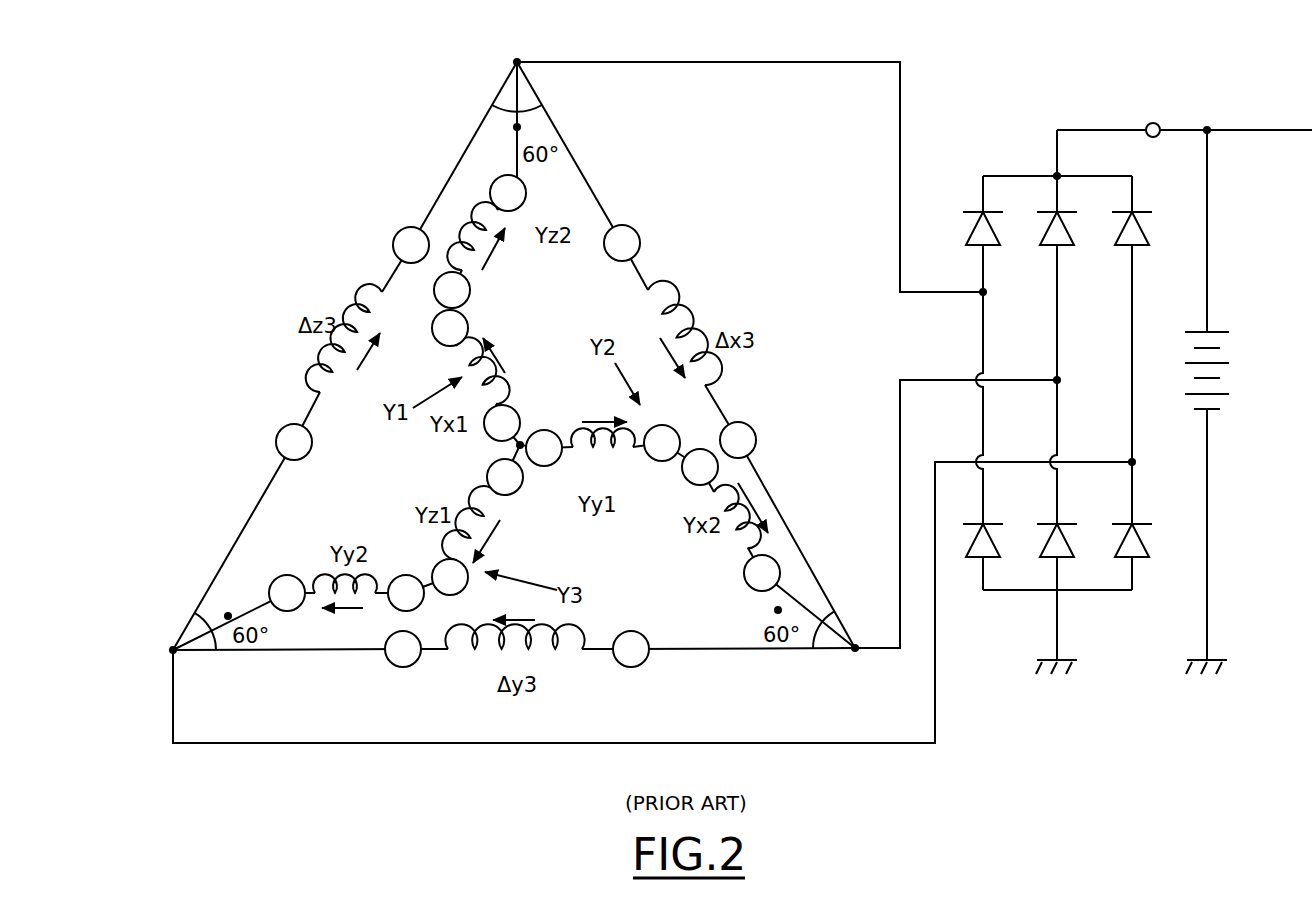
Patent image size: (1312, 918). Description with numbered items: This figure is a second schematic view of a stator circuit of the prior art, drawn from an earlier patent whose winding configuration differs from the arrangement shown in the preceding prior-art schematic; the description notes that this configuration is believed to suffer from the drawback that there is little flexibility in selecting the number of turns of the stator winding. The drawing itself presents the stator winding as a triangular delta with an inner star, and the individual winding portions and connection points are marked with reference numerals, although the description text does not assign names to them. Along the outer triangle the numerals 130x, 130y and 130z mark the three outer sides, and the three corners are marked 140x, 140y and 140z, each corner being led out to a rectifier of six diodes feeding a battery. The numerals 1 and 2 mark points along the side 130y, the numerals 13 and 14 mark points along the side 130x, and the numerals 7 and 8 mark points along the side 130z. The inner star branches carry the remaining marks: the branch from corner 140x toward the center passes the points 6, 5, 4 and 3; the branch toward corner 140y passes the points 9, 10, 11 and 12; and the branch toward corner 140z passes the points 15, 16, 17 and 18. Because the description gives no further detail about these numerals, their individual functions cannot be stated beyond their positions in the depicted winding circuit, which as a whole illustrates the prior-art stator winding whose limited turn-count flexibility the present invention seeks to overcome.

The winding terminal 1 is at (622, 243).
The winding terminal 2 is at (738, 440).
The winding terminal 3 is at (502, 423).
The winding terminal 4 is at (450, 328).
The winding terminal 5 is at (452, 290).
The winding terminal 6 is at (508, 193).
The winding terminal 7 is at (631, 649).
The winding terminal 8 is at (403, 649).
The winding terminal 9 is at (544, 448).
The winding terminal 10 is at (662, 443).
The winding terminal 11 is at (700, 467).
The winding terminal 12 is at (762, 573).
The winding terminal 13 is at (294, 442).
The winding terminal 14 is at (411, 245).
The winding terminal 15 is at (505, 477).
The winding terminal 16 is at (450, 577).
The winding terminal 17 is at (406, 593).
The winding terminal 18 is at (287, 593).
The delta winding side x 130x is at (345, 356).
The delta winding side y 130y is at (697, 355).
The delta winding side z 130z is at (501, 611).
The output connection point x 140x is at (546, 48).
The output connection point y 140y is at (858, 665).
The output connection point z 140z is at (144, 655).